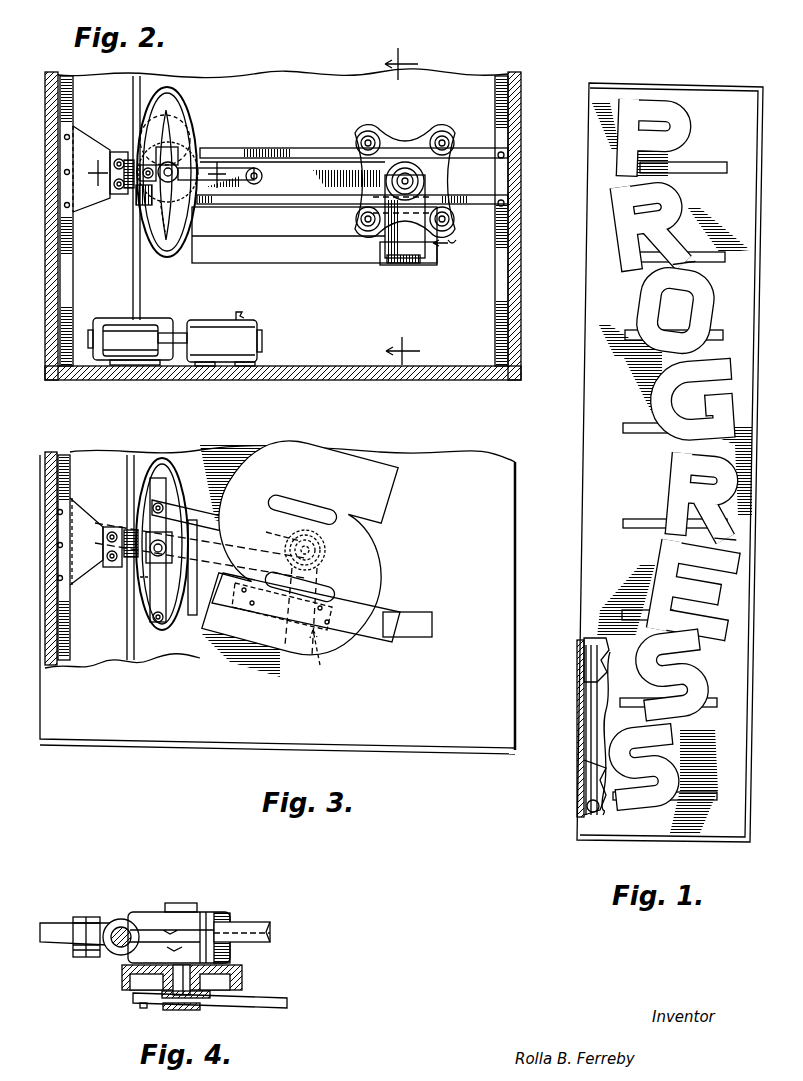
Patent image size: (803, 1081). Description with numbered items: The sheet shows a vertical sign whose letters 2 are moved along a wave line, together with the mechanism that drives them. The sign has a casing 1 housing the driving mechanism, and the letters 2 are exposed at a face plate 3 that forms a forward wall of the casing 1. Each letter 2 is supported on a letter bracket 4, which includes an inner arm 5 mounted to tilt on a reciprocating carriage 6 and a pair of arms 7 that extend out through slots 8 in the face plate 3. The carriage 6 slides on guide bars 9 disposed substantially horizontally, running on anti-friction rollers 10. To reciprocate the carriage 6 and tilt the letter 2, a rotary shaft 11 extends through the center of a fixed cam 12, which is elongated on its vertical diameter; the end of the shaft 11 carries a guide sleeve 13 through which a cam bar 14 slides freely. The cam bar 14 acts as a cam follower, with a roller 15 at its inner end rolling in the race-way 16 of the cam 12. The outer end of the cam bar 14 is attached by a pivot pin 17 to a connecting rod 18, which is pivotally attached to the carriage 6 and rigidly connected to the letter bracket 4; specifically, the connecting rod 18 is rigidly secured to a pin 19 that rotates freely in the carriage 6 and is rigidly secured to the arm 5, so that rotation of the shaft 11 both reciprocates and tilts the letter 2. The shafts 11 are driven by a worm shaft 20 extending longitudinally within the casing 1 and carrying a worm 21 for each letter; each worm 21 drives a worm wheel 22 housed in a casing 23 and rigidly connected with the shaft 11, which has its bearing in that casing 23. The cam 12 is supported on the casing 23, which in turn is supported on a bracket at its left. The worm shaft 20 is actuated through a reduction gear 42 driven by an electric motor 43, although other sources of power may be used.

In FIG. 2, the casing 1 is at (528, 302).
In FIG. 1, the casing 1 is at (709, 75).
In FIG. 3, the letters 2 is at (352, 472).
In FIG. 1, the letters 2 is at (690, 133).
In FIG. 1, the face plate 3 is at (592, 396).
In FIG. 2, the letter bracket 4 is at (272, 208).
In FIG. 3, the letter bracket 4 is at (318, 658).
In FIG. 2, the inner arm 5 is at (425, 201).
In FIG. 3, the inner arm 5 is at (318, 590).
In FIG. 2, the reciprocating carriage 6 is at (415, 143).
In FIG. 2, the arms 7 is at (400, 266).
In FIG. 3, the arms 7 is at (286, 648).
In FIG. 2, the slots 8 is at (332, 258).
In FIG. 3, the slots 8 is at (425, 612).
In FIG. 2, the guide bars 9 is at (300, 148).
In FIG. 3, the guide bars 9 is at (192, 600).
In FIG. 4, the guide bars 9 is at (250, 930).
In FIG. 2, the anti-friction rollers 10 is at (372, 132).
In FIG. 2, the rotary shaft 11 is at (140, 205).
In FIG. 3, the rotary shaft 11 is at (142, 577).
In FIG. 4, the rotary shaft 11 is at (193, 990).
In FIG. 2, the fixed cam 12 is at (183, 115).
In FIG. 3, the fixed cam 12 is at (147, 458).
In FIG. 4, the fixed cam 12 is at (122, 972).
In FIG. 1, the fixed cam 12 is at (600, 686).
In FIG. 2, the guide sleeve 13 is at (170, 168).
In FIG. 3, the guide sleeve 13 is at (152, 540).
In FIG. 4, the guide sleeve 13 is at (182, 1008).
In FIG. 2, the cam bar 14 is at (228, 168).
In FIG. 3, the cam bar 14 is at (155, 603).
In FIG. 4, the cam bar 14 is at (271, 997).
In FIG. 2, the roller 15 is at (140, 187).
In FIG. 3, the roller 15 is at (166, 612).
In FIG. 4, the roller 15 is at (137, 982).
In FIG. 2, the race-way 16 is at (190, 138).
In FIG. 3, the race-way 16 is at (178, 490).
In FIG. 4, the race-way 16 is at (227, 992).
In FIG. 2, the pivot pin 17 is at (256, 168).
In FIG. 3, the pivot pin 17 is at (163, 492).
In FIG. 2, the connecting rod 18 is at (318, 170).
In FIG. 3, the connecting rod 18 is at (261, 528).
In FIG. 2, the pin 19 is at (405, 162).
In FIG. 3, the pin 19 is at (325, 550).
In FIG. 2, the worm shaft 20 is at (131, 287).
In FIG. 3, the worm shaft 20 is at (125, 621).
In FIG. 4, the worm shaft 20 is at (120, 928).
In FIG. 1, the worm shaft 20 is at (590, 805).
In FIG. 2, the worm 21 is at (119, 158).
In FIG. 2, the worm wheel 22 is at (145, 120).
In FIG. 2, the casing 23 is at (160, 244).
In FIG. 3, the casing 23 is at (180, 555).
In FIG. 4, the casing 23 is at (208, 922).
In FIG. 2, the reduction gear 42 is at (150, 325).
In FIG. 2, the electric motor 43 is at (225, 322).